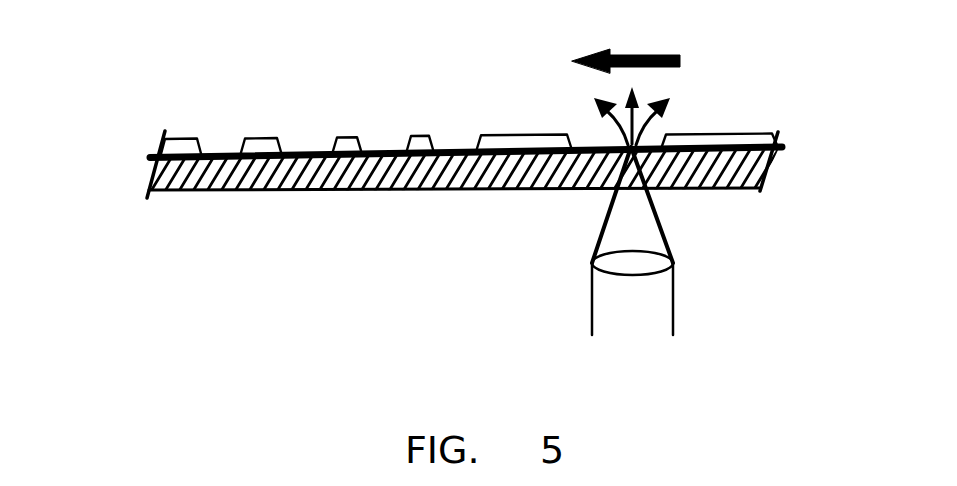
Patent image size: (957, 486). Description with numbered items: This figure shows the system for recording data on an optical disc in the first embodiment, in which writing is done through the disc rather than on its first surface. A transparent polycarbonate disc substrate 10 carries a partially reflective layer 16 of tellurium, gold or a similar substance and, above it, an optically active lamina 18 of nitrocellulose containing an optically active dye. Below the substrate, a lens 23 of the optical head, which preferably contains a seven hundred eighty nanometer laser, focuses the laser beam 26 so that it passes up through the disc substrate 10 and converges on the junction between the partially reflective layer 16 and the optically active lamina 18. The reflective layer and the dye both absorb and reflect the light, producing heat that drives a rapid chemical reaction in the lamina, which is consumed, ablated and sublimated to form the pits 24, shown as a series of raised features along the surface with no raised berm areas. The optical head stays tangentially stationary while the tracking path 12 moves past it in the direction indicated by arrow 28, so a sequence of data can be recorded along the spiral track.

The disc substrate 10 is at (357, 188).
The tracking path 12 is at (770, 117).
The partially reflective layer 16 is at (155, 153).
The optically active lamina 18 is at (685, 135).
The lens 23 is at (675, 255).
The pits 24 is at (215, 152).
The laser beam 26 is at (622, 207).
The arrow 28 is at (653, 55).